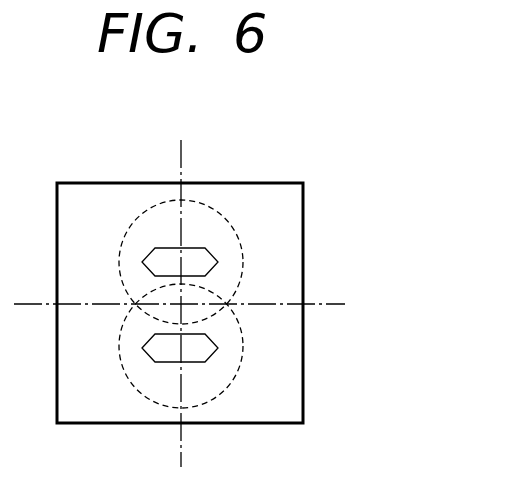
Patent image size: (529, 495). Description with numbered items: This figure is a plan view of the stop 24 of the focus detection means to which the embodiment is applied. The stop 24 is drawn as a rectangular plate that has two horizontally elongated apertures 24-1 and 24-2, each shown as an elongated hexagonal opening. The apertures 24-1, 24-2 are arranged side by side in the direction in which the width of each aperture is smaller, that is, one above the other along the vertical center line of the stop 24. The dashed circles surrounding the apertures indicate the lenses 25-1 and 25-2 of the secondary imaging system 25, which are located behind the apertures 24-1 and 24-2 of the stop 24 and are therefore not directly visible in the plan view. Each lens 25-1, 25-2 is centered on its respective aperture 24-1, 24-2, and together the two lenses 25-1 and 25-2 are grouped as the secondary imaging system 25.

The stop 24 is at (82, 191).
The aperture 24-1 is at (197, 250).
The aperture 24-2 is at (203, 353).
The secondary imaging system 25 is at (398, 248).
The lens 25-1 is at (240, 251).
The lens 25-2 is at (240, 335).